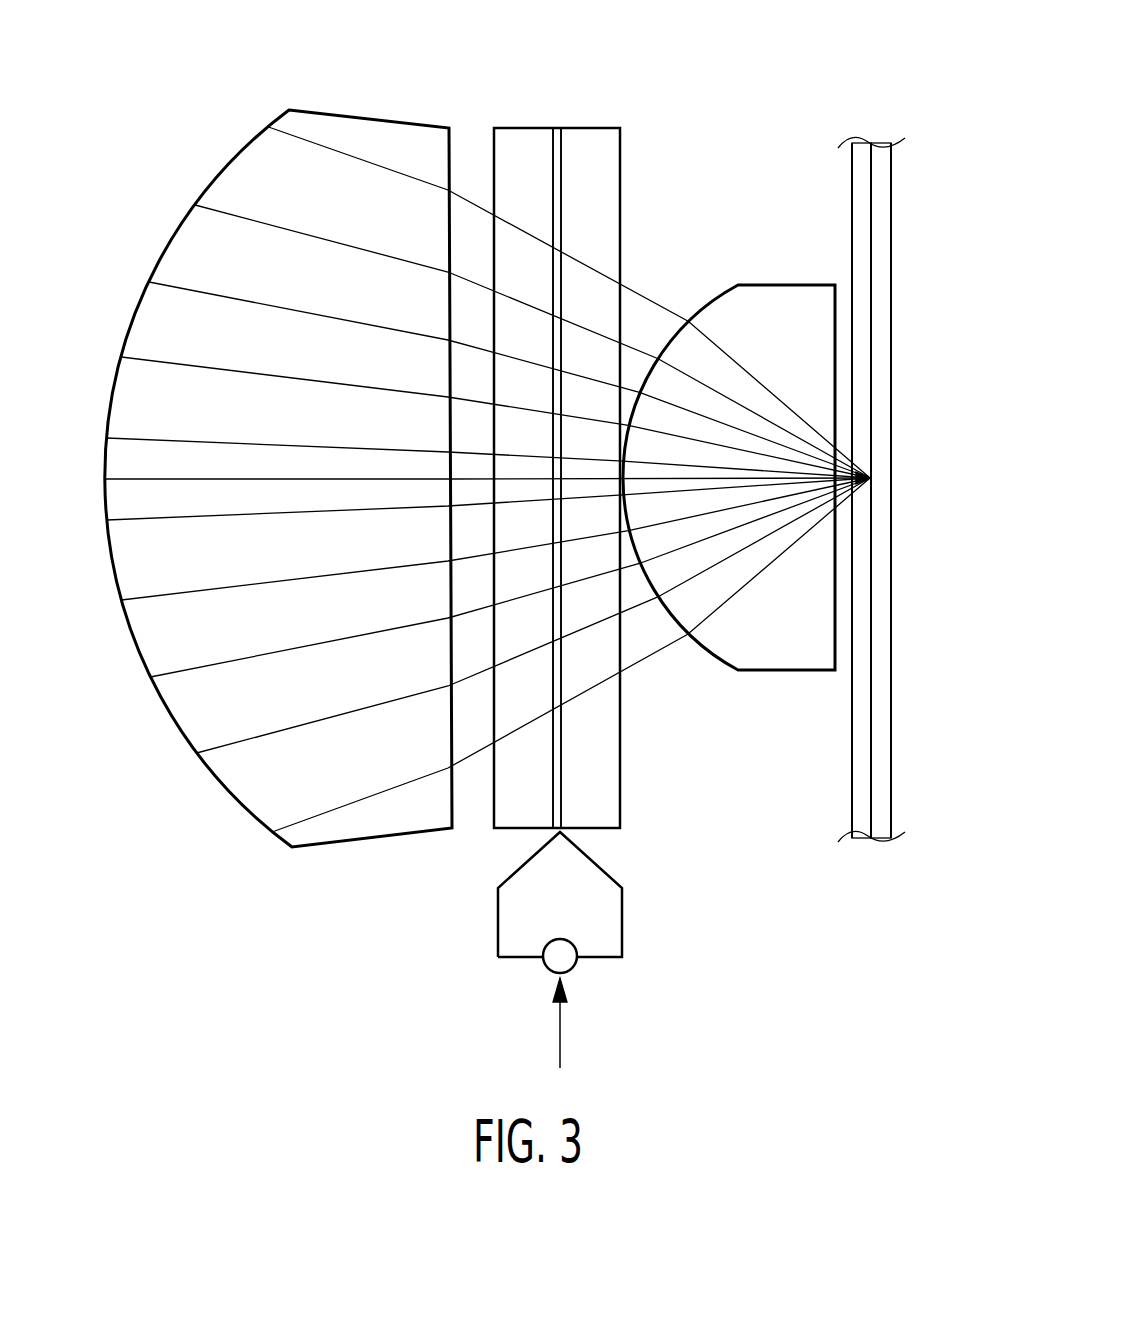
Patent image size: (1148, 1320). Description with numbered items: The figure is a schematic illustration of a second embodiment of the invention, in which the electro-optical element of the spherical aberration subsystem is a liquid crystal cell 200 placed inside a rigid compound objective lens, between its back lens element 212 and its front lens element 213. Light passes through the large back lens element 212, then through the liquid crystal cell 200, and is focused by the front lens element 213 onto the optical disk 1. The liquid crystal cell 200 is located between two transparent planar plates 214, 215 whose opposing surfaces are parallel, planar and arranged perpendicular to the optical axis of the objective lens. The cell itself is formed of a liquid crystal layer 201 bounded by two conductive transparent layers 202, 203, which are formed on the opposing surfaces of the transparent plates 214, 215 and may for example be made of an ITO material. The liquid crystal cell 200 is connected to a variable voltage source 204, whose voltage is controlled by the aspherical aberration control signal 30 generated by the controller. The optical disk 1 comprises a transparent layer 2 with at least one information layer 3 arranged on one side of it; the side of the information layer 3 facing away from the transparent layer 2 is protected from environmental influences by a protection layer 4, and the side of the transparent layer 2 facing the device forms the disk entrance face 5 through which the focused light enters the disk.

The optical disk 1 is at (898, 430).
The transparent layer 2 is at (862, 177).
The information layer 3 is at (872, 207).
The protection layer 4 is at (880, 228).
The disk entrance face 5 is at (855, 250).
The aspherical aberration control signal 30 is at (560, 1044).
The liquid crystal cell 200 is at (516, 475).
The liquid crystal layer 201 is at (561, 787).
The conductive transparent layer 202 is at (557, 774).
The conductive transparent layer 203 is at (563, 808).
The variable voltage source 204 is at (545, 966).
The back lens element 212 is at (384, 118).
The front lens element 213 is at (755, 305).
The transparent planar plate 214 is at (512, 135).
The transparent planar plate 215 is at (594, 135).